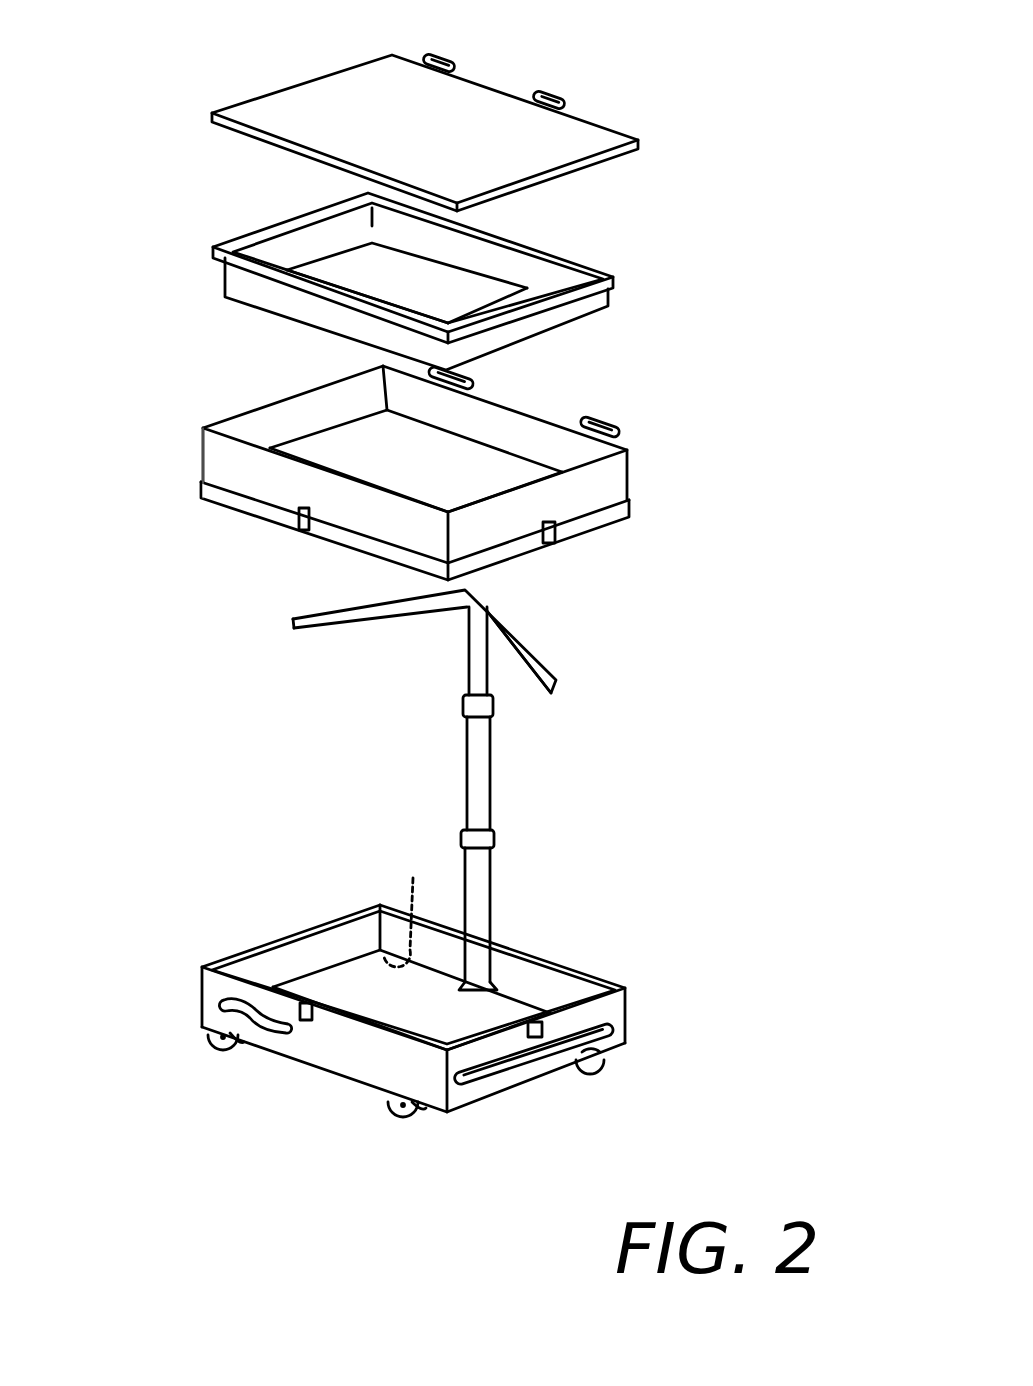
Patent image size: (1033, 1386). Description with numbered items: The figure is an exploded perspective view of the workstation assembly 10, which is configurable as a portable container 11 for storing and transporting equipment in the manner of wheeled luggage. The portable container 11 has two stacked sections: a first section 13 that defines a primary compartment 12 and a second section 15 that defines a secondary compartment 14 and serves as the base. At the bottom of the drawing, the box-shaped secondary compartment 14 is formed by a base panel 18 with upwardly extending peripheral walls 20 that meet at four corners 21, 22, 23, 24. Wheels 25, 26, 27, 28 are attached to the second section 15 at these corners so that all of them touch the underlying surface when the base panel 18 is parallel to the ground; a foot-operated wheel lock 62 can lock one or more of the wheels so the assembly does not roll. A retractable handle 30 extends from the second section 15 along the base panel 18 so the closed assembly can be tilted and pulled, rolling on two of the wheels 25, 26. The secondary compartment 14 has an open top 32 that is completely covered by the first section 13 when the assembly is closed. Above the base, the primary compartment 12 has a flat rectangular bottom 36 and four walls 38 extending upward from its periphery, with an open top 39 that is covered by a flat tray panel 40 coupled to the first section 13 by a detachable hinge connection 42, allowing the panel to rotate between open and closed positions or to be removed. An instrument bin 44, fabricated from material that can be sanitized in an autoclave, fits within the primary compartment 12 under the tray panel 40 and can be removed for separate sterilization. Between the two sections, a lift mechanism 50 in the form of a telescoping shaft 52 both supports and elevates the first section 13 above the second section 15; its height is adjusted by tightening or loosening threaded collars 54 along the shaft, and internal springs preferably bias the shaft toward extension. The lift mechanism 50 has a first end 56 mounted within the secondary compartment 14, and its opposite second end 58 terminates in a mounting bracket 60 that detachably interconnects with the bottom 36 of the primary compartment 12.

The workstation assembly 10 is at (652, 68).
The portable container 11 is at (141, 293).
The primary compartment 12 is at (440, 463).
The first section 13 is at (652, 448).
The secondary compartment 14 is at (411, 1008).
The second section 15 is at (640, 988).
The base panel 18 is at (335, 983).
The peripheral walls 20 is at (258, 970).
The corner 21 is at (452, 1097).
The corner 22 is at (627, 1040).
The corner 23 is at (362, 912).
The corner 24 is at (203, 995).
The wheel 25 is at (385, 1106).
The wheel 26 is at (603, 1062).
The wheel 27 is at (235, 1052).
The wheel 28 is at (406, 907).
The retractable handle 30 is at (572, 1045).
The open top 32 is at (492, 1007).
The flat rectangular bottom 36 is at (345, 443).
The walls 38 is at (183, 490).
The open top 39 is at (445, 462).
The flat tray panel 40 is at (562, 172).
The detachable hinge connection 42 is at (612, 425).
The instrument bin 44 is at (270, 214).
The lift mechanism 50 is at (485, 813).
The telescoping shaft 52 is at (478, 812).
The threaded collars 54 is at (470, 706).
The first end 56 is at (466, 988).
The second end 58 is at (532, 637).
The mounting bracket 60 is at (436, 629).
The wheel lock 62 is at (210, 1003).